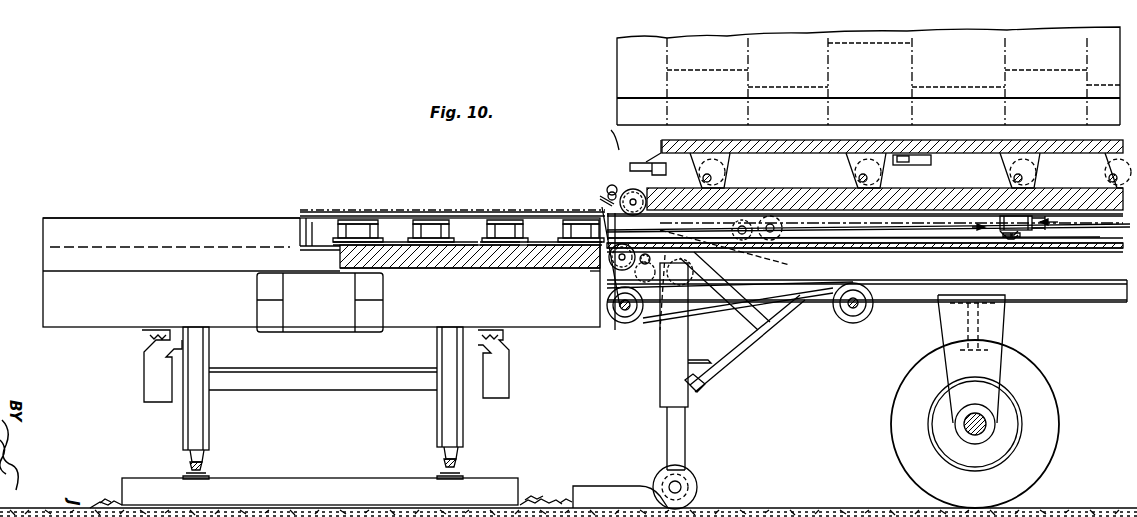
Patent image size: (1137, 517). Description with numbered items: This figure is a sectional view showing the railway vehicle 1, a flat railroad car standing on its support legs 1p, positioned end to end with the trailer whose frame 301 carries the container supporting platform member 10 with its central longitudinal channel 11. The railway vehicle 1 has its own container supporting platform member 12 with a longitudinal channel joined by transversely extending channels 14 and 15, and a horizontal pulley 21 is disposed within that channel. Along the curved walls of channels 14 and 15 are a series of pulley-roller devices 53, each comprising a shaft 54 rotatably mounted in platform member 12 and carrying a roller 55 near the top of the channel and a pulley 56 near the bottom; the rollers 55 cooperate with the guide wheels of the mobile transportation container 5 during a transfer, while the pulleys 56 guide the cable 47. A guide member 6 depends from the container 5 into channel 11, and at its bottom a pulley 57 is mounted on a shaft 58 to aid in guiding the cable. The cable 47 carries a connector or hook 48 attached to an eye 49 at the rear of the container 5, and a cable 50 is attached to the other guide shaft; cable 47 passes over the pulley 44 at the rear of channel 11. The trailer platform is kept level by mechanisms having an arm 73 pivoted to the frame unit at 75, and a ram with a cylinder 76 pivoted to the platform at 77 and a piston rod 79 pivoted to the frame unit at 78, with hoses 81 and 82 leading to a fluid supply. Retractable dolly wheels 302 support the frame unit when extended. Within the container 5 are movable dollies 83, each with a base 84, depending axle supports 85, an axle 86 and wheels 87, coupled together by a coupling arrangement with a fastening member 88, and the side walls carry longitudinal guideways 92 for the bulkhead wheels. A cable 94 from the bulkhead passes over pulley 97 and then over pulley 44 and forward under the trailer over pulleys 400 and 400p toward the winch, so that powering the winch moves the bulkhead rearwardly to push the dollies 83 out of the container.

The railway vehicle 1 is at (95, 300).
The platform support leg 1p is at (182, 453).
The mobile transportation container 5 is at (983, 36).
The guide member 6 is at (1021, 226).
The container supporting platform member 10 is at (875, 244).
The channel 11 is at (955, 236).
The container supporting platform member 12 is at (146, 217).
The transversely extending channel 14 is at (562, 272).
The transversely extending channel 15 is at (93, 247).
The horizontal pulley 21 is at (340, 248).
The pulley 44 is at (644, 250).
The cable 47 is at (865, 226).
The connector or hook 48 is at (607, 187).
The eye 49 is at (625, 191).
The cable 50 is at (552, 248).
The pulley-roller device 53 is at (357, 215).
The shaft 54 is at (365, 220).
The roller 55 is at (340, 222).
The pulley 56 is at (380, 244).
The pulley 57 is at (1018, 236).
The shaft 58 is at (1006, 236).
The arm 73 is at (720, 230).
The pivot 75 is at (632, 254).
The cylinder 76 is at (740, 238).
The pivot 77 is at (782, 228).
The pivot 78 is at (716, 300).
The piston rod 79 is at (724, 325).
The hose 81 is at (750, 250).
The hose 82 is at (732, 295).
The movable dolly 83 is at (663, 150).
The base or supporting member 84 is at (787, 150).
The axle support 85 is at (715, 160).
The axle 86 is at (717, 178).
The wheel 87 is at (951, 176).
The locking block 88 is at (900, 165).
The longitudinal guideway 92 is at (614, 130).
The cable 94 is at (1058, 188).
The pulley 97 is at (604, 206).
The trailer frame 301 is at (1046, 305).
The retractable dolly wheel 302 is at (698, 476).
The pulley 400 is at (628, 322).
The pulley 400p is at (846, 320).